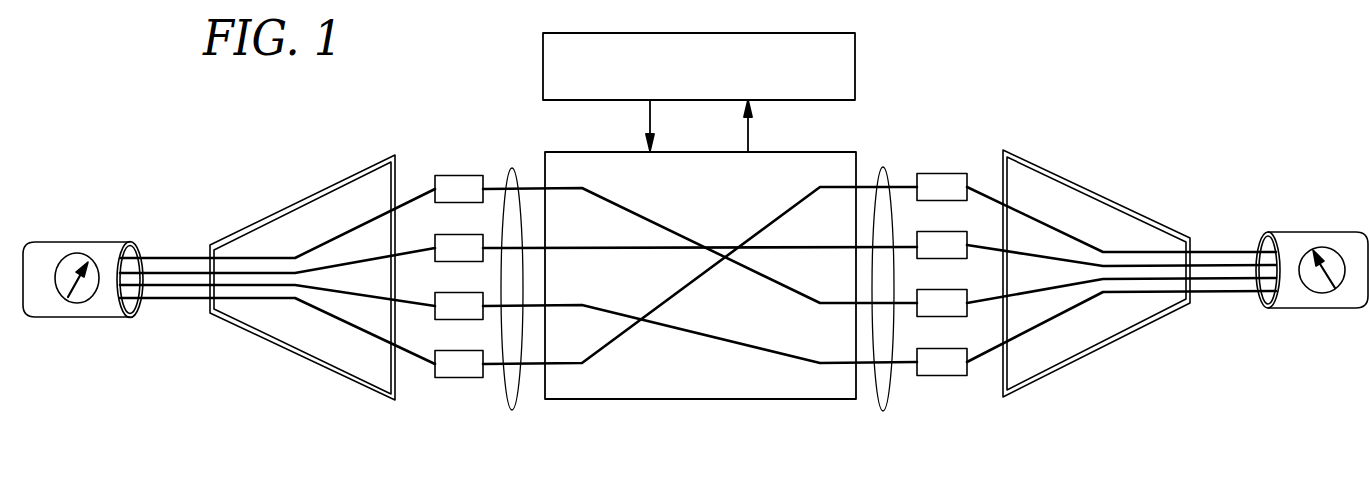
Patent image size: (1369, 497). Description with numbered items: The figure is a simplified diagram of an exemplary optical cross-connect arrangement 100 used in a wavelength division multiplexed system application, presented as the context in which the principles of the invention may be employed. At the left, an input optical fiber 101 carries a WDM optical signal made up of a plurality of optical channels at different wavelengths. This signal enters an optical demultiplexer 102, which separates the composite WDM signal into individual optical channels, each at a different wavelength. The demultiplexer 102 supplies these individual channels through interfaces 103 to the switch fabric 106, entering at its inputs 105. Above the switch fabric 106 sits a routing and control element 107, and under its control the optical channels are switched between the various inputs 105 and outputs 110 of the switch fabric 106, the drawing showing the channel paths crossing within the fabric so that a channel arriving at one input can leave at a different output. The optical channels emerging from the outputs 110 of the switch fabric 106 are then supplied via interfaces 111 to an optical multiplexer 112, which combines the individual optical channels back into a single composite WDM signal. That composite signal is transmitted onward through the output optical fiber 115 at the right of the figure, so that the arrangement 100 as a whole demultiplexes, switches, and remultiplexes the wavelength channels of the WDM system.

The optical cross-connect arrangement 100 is at (281, 104).
The input optical fiber 101 is at (80, 317).
The optical demultiplexer 102 is at (260, 337).
The interfaces 103 is at (460, 378).
The inputs 105 is at (513, 411).
The switch fabric 106 is at (718, 400).
The routing and control element 107 is at (855, 64).
The outputs 110 is at (885, 412).
The interfaces 111 is at (943, 375).
The optical multiplexer 112 is at (1143, 328).
The output optical fiber 115 is at (1320, 308).